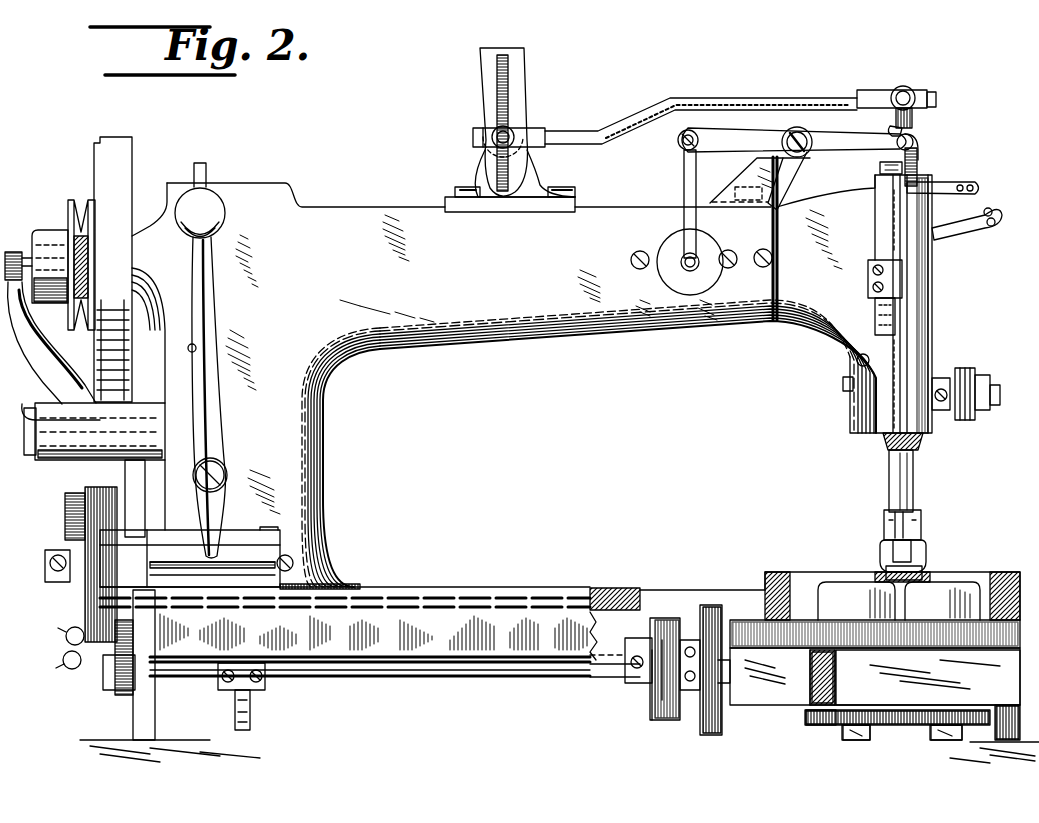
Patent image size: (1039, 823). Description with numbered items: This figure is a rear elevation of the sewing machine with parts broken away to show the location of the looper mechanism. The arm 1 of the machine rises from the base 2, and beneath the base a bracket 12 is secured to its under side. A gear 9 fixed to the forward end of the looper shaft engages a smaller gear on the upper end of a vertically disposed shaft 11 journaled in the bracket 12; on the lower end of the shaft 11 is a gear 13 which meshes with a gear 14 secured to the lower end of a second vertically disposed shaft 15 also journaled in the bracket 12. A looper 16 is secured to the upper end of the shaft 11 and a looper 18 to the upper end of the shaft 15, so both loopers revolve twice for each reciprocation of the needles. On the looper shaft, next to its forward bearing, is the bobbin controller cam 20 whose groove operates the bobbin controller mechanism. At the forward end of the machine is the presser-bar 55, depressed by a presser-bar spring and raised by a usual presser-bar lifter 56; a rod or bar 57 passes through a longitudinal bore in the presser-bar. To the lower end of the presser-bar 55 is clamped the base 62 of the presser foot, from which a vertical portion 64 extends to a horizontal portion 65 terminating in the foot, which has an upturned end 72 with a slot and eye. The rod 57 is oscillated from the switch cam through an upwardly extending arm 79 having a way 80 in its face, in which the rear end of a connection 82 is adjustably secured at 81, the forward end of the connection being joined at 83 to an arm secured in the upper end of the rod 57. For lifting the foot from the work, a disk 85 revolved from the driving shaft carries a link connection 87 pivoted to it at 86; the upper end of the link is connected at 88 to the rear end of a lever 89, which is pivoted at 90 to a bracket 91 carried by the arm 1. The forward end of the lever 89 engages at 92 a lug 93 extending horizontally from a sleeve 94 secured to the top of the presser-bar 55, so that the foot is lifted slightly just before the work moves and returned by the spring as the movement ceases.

The arm 1 is at (332, 278).
The base 2 is at (560, 588).
The gear 9 is at (832, 672).
The vertically disposed shaft 11 is at (852, 740).
The bracket 12 is at (928, 677).
The gear 13 is at (813, 724).
The gear 14 is at (996, 708).
The vertically disposed shaft 15 is at (946, 740).
The looper 16 is at (856, 601).
The looper 18 is at (942, 601).
The bobbin controller cam 20 is at (705, 728).
The presser-bar 55 is at (890, 168).
The presser-bar lifter 56 is at (892, 320).
The rod or bar 57 is at (914, 121).
The base of presser foot 62 is at (885, 512).
The vertical portion 64 is at (924, 534).
The horizontal portion 65 is at (928, 564).
The upturned end 72 is at (886, 548).
The upwardly extending arm 79 is at (526, 90).
The way 80 is at (503, 52).
The adjustable securing point 81 is at (496, 134).
The connection 82 is at (674, 98).
The connection point 83 is at (897, 88).
The disc 85 is at (703, 288).
The pivot 86 is at (694, 260).
The link connection 87 is at (685, 214).
The connection point 88 is at (682, 140).
The lever 89 is at (746, 136).
The pivot 90 is at (782, 141).
The bracket 91 is at (786, 180).
The engagement point 92 is at (912, 142).
The lug 93 is at (890, 128).
The sleeve 94 is at (926, 152).